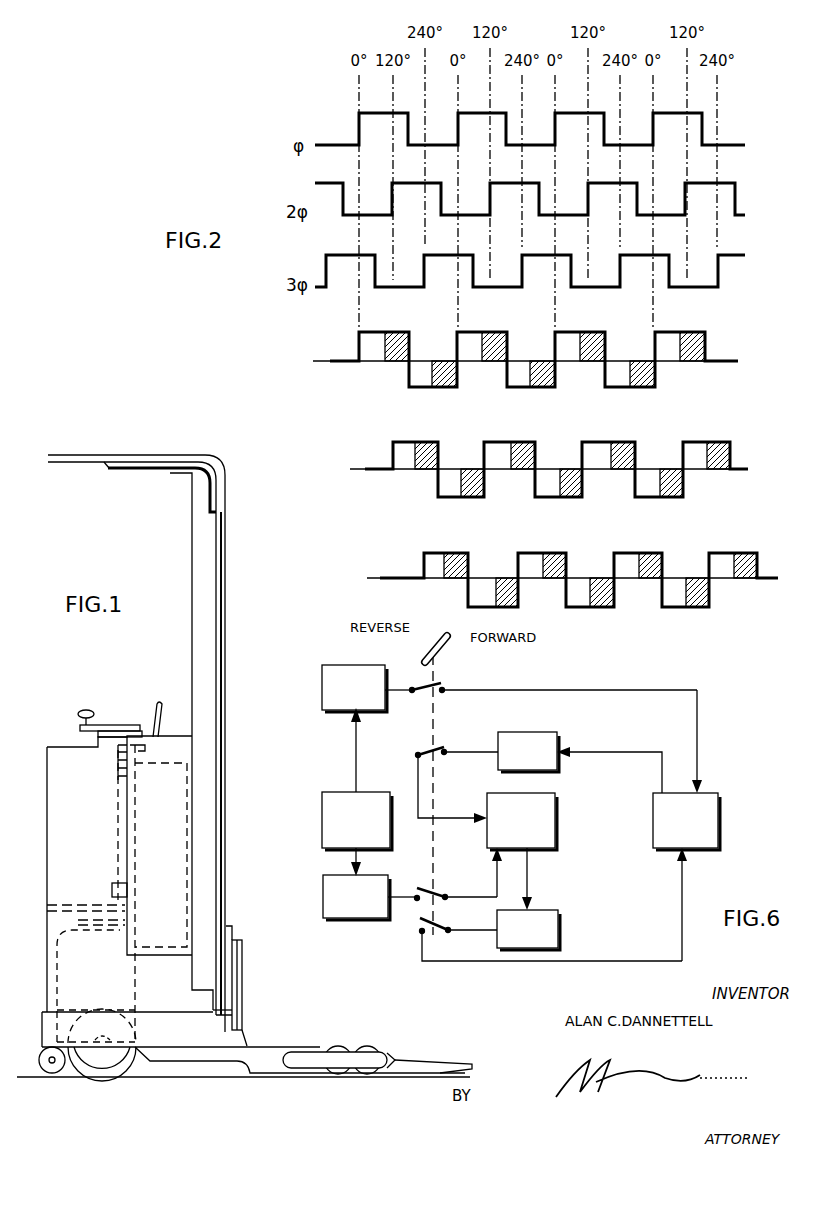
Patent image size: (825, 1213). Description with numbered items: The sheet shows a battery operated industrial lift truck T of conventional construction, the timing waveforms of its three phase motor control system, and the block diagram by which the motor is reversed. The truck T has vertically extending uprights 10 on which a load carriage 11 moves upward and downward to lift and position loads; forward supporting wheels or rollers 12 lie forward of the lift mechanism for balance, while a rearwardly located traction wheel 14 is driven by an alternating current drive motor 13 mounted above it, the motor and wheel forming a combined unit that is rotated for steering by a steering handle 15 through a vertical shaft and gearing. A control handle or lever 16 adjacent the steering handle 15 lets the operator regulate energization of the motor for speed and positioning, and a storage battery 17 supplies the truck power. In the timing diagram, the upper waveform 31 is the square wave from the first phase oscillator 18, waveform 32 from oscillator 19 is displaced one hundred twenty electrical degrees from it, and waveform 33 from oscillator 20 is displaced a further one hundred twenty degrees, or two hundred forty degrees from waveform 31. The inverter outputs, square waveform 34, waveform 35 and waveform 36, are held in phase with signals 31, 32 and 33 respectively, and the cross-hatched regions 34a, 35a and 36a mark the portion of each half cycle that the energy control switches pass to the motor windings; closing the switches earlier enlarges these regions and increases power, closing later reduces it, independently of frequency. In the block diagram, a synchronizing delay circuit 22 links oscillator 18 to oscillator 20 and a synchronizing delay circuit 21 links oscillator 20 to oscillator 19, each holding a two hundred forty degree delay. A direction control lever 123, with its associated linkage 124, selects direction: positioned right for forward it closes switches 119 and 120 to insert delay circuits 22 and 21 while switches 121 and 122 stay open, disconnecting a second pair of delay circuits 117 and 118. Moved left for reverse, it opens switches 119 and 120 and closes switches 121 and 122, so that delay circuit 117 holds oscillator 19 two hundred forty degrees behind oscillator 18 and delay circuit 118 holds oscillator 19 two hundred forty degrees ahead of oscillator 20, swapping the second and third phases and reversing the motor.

In FIG. 1, the uprights 10 is at (212, 752).
In FIG. 1, the load carriage 11 is at (238, 980).
In FIG. 1, the forward supporting wheels 12 is at (366, 1046).
In FIG. 1, the alternating current drive motor 13 is at (75, 963).
In FIG. 1, the traction wheel 14 is at (103, 1068).
In FIG. 1, the steering handle 15 is at (103, 722).
In FIG. 1, the control handle 16 is at (163, 703).
In FIG. 1, the storage battery 17 is at (171, 872).
In FIG. 1, the truck T is at (238, 808).
In FIG. 6, the first phase oscillator 18 is at (327, 792).
In FIG. 6, the second phase oscillator 19 is at (557, 821).
In FIG. 6, the third phase oscillator 20 is at (720, 822).
In FIG. 6, the synchronizing delay circuit 21 is at (548, 731).
In FIG. 6, the synchronizing delay circuit 22 is at (322, 666).
In FIG. 6, the synchronizing delay circuit 117 is at (338, 918).
In FIG. 6, the synchronizing delay circuit 118 is at (560, 930).
In FIG. 6, the switch 119 is at (445, 697).
In FIG. 6, the switch 120 is at (418, 749).
In FIG. 6, the switch 121 is at (428, 883).
In FIG. 6, the switch 122 is at (412, 930).
In FIG. 6, the direction control lever 123 is at (450, 641).
In FIG. 6, the switch linkage 124 is at (433, 665).
In FIG. 2, the upper waveform 31 is at (747, 146).
In FIG. 2, the waveform 32 is at (745, 210).
In FIG. 2, the waveform 33 is at (745, 258).
In FIG. 2, the square waveform 34 is at (537, 359).
In FIG. 2, the cross-hatched region 34a is at (403, 332).
In FIG. 2, the waveform 35 is at (567, 483).
In FIG. 2, the cross-hatched portion 35a is at (462, 483).
In FIG. 2, the waveform 36 is at (583, 585).
In FIG. 2, the cross-hatched portion 36a is at (503, 582).